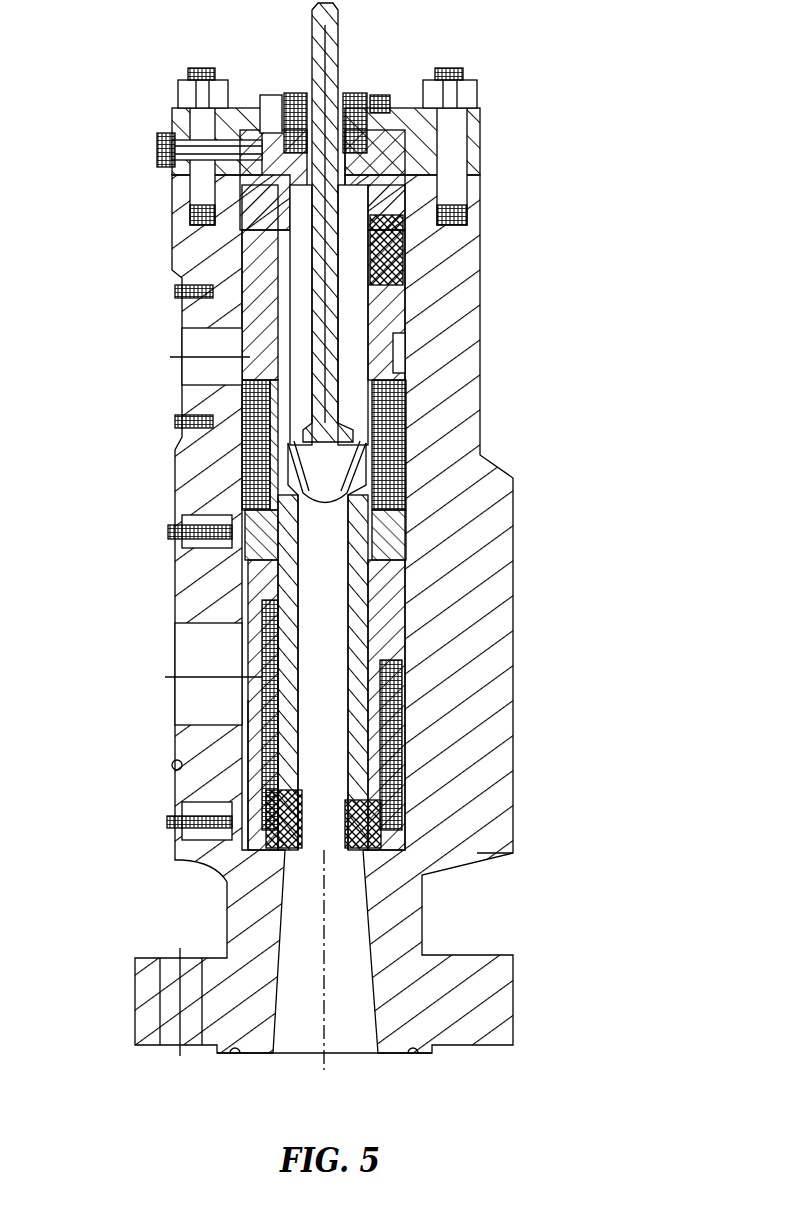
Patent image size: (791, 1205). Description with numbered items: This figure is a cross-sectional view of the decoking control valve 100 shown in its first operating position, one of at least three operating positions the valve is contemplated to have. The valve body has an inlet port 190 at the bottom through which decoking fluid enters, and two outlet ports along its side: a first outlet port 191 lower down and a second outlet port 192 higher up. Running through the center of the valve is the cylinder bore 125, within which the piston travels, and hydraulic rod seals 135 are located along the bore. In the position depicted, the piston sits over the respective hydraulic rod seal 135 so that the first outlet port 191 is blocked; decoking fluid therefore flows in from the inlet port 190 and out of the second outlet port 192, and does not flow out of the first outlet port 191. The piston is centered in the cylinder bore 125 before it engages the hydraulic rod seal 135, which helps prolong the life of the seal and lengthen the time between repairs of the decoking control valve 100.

The decoking control valve 100 is at (540, 148).
The cylinder bore 125 is at (382, 295).
The hydraulic rod seal 135 is at (341, 793).
The inlet port 190 is at (296, 1071).
The first outlet port 191 is at (155, 663).
The second outlet port 192 is at (161, 341).